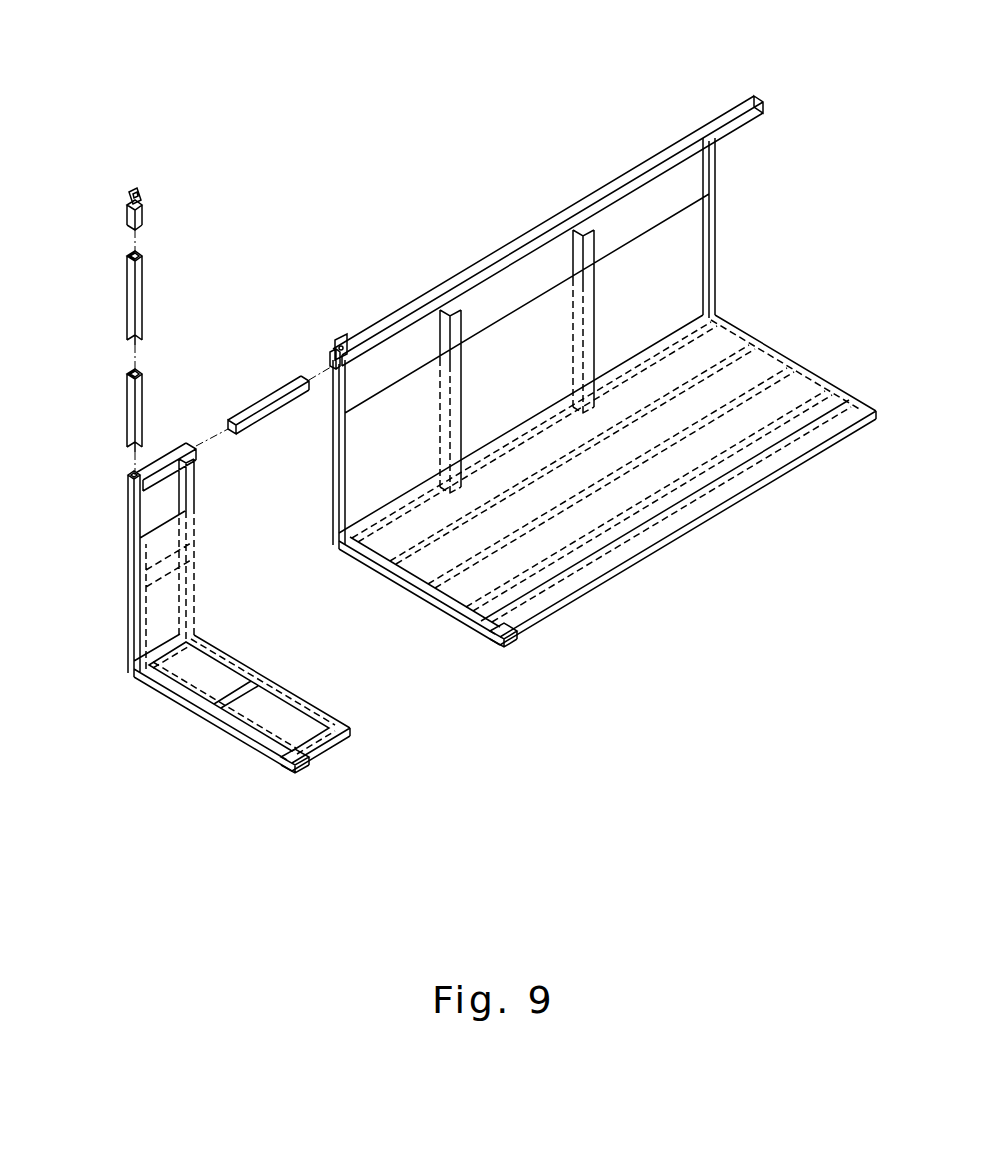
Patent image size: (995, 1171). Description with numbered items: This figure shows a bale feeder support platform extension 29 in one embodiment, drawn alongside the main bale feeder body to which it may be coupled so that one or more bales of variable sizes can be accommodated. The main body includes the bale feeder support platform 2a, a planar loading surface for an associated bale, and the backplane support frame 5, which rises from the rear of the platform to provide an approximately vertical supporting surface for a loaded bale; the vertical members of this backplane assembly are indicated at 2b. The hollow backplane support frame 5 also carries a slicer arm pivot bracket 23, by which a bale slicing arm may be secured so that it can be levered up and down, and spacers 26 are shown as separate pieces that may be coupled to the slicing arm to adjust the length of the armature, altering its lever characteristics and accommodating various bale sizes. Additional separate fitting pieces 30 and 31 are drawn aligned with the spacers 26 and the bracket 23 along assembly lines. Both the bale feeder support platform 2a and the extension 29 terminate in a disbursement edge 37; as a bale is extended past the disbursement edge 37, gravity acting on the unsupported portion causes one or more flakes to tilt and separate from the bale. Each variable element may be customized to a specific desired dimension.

The bale feeder support platform 2a is at (612, 492).
The back wall frame of the platform 2b is at (657, 283).
The backplane support frame 5 is at (600, 187).
The slicer arm pivot bracket 23 is at (338, 340).
The spacers 26 is at (145, 393).
The bale feeder support platform extension 29 is at (152, 740).
The connecting bar 30 is at (263, 400).
The clip fitting 31 is at (145, 202).
The disbursement edge 37 is at (253, 735).